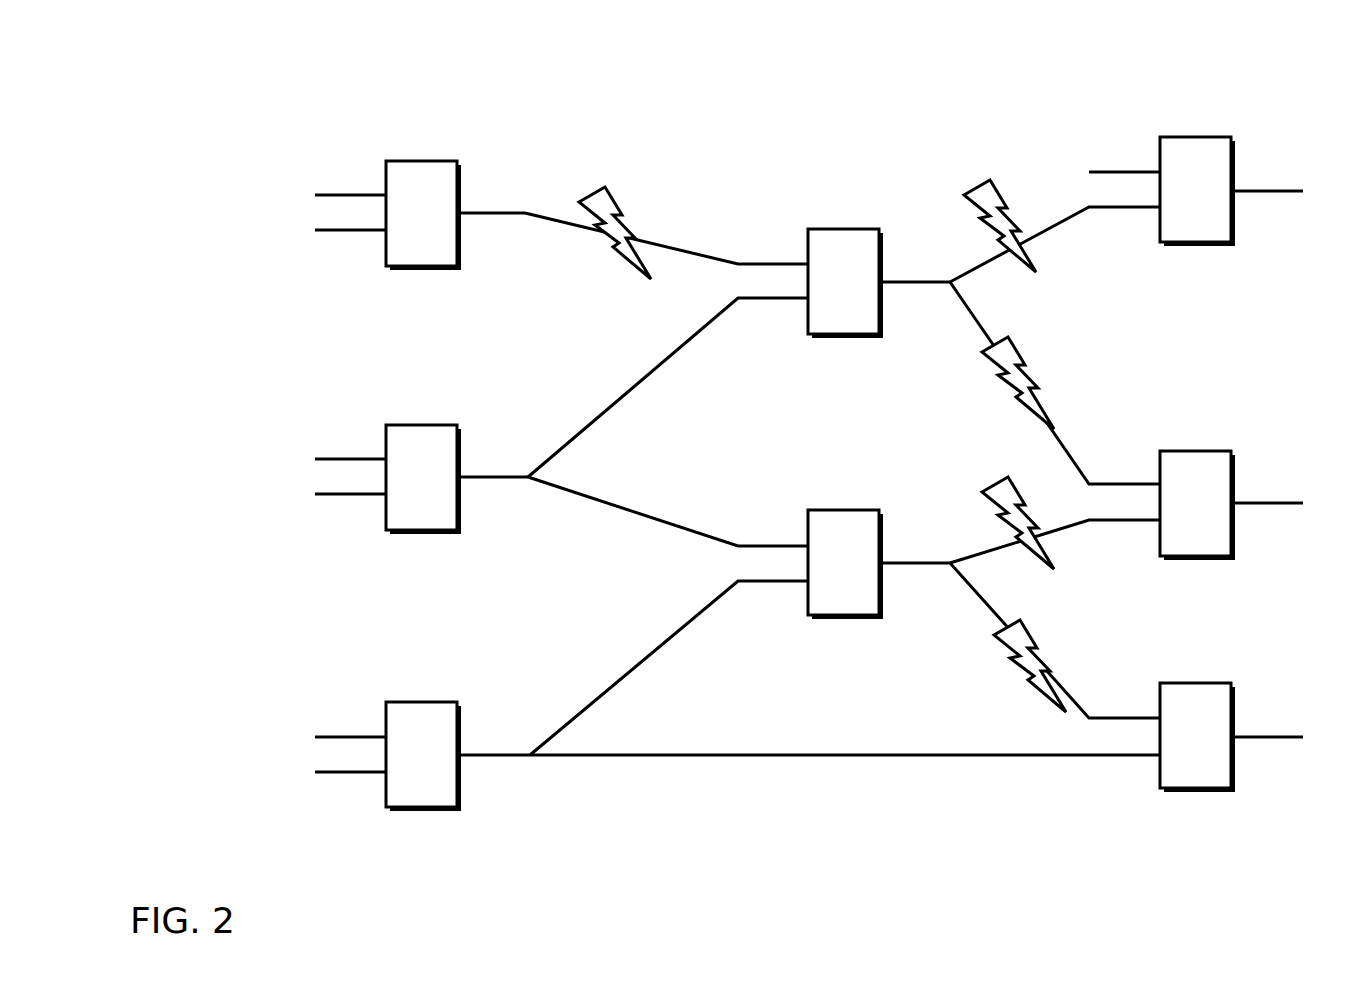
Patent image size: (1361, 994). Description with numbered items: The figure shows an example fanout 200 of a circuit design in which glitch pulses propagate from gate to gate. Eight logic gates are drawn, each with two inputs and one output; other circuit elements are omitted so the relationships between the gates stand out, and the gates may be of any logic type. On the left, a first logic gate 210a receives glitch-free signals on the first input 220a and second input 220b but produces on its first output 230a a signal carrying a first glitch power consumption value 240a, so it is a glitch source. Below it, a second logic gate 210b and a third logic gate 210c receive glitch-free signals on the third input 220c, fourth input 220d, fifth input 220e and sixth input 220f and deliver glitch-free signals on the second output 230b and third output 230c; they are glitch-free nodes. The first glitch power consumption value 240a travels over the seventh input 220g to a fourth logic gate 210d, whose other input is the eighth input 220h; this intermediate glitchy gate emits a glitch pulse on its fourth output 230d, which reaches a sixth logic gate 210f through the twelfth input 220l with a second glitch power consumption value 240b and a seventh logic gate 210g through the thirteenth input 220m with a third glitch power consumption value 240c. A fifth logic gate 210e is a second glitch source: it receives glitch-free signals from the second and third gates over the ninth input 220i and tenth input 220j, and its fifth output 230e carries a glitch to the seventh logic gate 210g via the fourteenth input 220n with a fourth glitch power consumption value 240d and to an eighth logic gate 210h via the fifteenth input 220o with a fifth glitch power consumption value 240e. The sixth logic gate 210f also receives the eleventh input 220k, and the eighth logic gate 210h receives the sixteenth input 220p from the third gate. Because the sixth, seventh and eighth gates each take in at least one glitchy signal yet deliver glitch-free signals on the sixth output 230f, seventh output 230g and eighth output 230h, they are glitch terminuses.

The fanout 200 is at (1228, 106).
The first logic gate 210a is at (423, 215).
The second logic gate 210b is at (423, 479).
The third logic gate 210c is at (423, 756).
The fourth logic gate 210d is at (845, 283).
The fifth logic gate 210e is at (845, 564).
The sixth logic gate 210f is at (1197, 191).
The seventh logic gate 210g is at (1197, 505).
The eighth logic gate 210h is at (1197, 737).
The first input 220a is at (340, 195).
The second input 220b is at (338, 233).
The third input 220c is at (340, 459).
The fourth input 220d is at (338, 497).
The fifth input 220e is at (340, 737).
The sixth input 220f is at (338, 775).
The seventh input 220g is at (755, 262).
The eighth input 220h is at (760, 302).
The ninth input 220i is at (762, 545).
The tenth input 220j is at (758, 583).
The eleventh input 220k is at (1112, 171).
The twelfth input 220l is at (1108, 210).
The thirteenth input 220m is at (1110, 484).
The fourteenth input 220n is at (1110, 520).
The fifteenth input 220o is at (1108, 718).
The sixteenth input 220p is at (1110, 756).
The first output 230a is at (490, 211).
The second output 230b is at (490, 472).
The third output 230c is at (490, 750).
The fourth output 230d is at (905, 280).
The fifth output 230e is at (912, 561).
The sixth output 230f is at (1263, 189).
The seventh output 230g is at (1263, 501).
The eighth output 230h is at (1263, 735).
The first glitch power consumption value 240a is at (618, 214).
The second glitch power consumption value 240b is at (988, 180).
The third glitch power consumption value 240c is at (1036, 390).
The fourth glitch power consumption value 240d is at (1000, 478).
The fifth glitch power consumption value 240e is at (1012, 664).